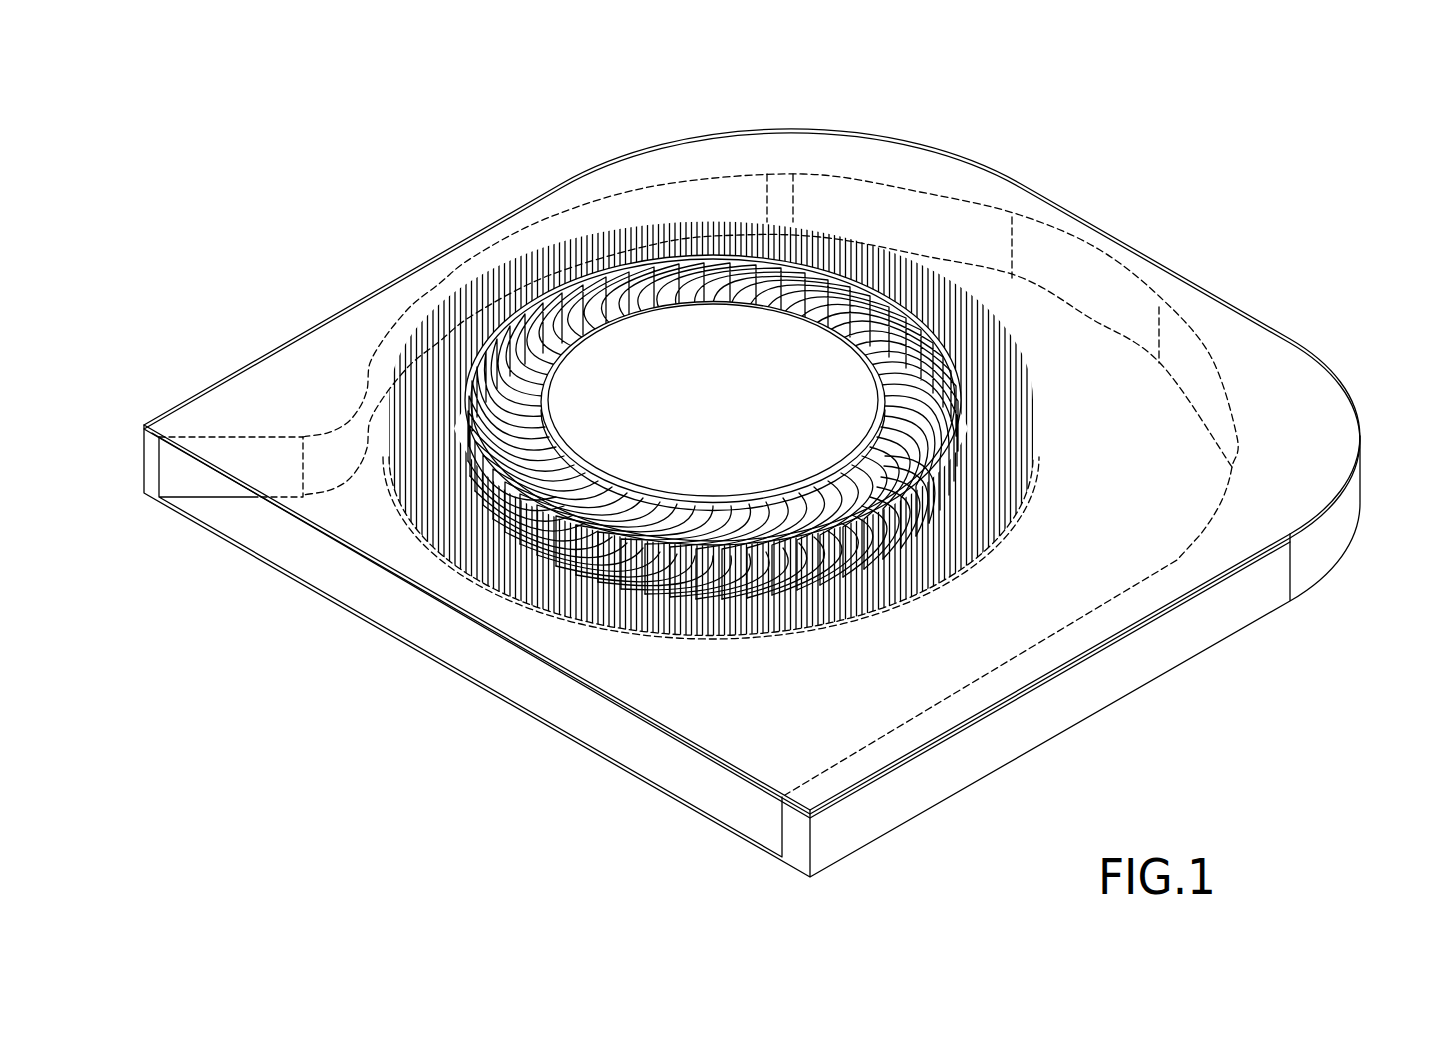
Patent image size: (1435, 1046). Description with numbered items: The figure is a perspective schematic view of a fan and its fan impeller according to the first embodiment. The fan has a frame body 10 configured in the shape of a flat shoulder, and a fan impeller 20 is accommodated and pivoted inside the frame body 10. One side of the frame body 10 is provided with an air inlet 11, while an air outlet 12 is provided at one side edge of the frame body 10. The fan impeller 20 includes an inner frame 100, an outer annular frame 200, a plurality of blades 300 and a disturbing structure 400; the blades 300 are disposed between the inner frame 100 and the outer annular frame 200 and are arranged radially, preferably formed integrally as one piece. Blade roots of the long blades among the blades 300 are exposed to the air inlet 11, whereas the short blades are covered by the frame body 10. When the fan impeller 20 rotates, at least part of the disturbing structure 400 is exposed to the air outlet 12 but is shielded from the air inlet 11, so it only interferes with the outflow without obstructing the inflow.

The frame body 10 is at (1298, 326).
The air inlet 11 is at (908, 312).
The air outlet 12 is at (607, 770).
The fan impeller 20 is at (608, 305).
The inner frame 100 is at (992, 306).
The outer annular frame 200 is at (964, 588).
The blades 300 is at (701, 348).
The disturbing structure 400 is at (1057, 357).